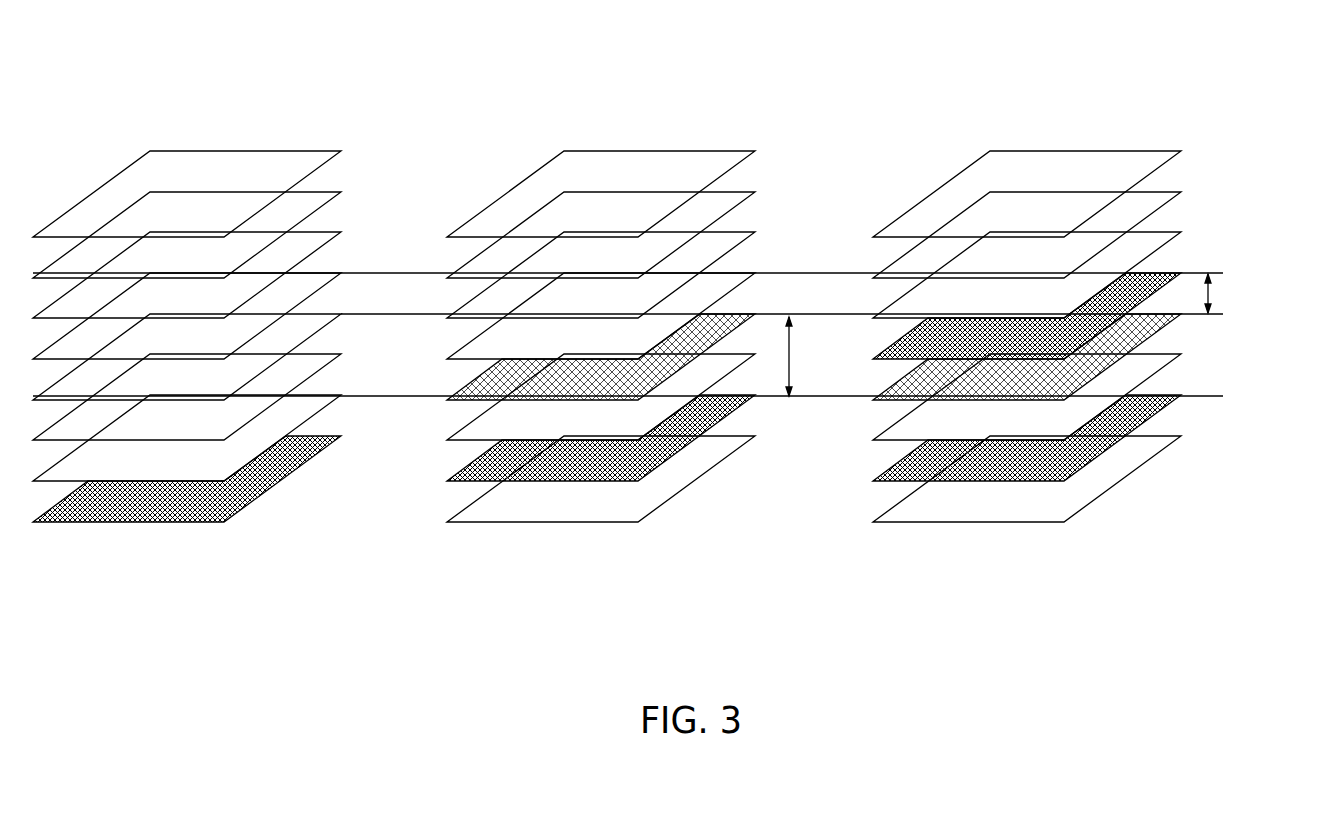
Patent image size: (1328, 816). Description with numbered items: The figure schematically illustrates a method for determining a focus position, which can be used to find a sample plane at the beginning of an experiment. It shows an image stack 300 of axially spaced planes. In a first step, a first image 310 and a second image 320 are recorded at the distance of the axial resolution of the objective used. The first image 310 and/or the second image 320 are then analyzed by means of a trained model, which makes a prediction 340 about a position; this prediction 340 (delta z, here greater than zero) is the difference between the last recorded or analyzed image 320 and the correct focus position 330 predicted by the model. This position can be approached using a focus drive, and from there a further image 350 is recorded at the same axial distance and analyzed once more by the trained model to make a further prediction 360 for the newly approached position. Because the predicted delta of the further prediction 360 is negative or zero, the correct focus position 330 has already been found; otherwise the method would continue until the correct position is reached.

The image stack 300 is at (193, 190).
The first image 310 is at (259, 498).
The second image 320 is at (678, 452).
The correct focus position 330 is at (473, 380).
The prediction 340 is at (793, 338).
The further image 350 is at (871, 358).
The further prediction 360 is at (1207, 305).